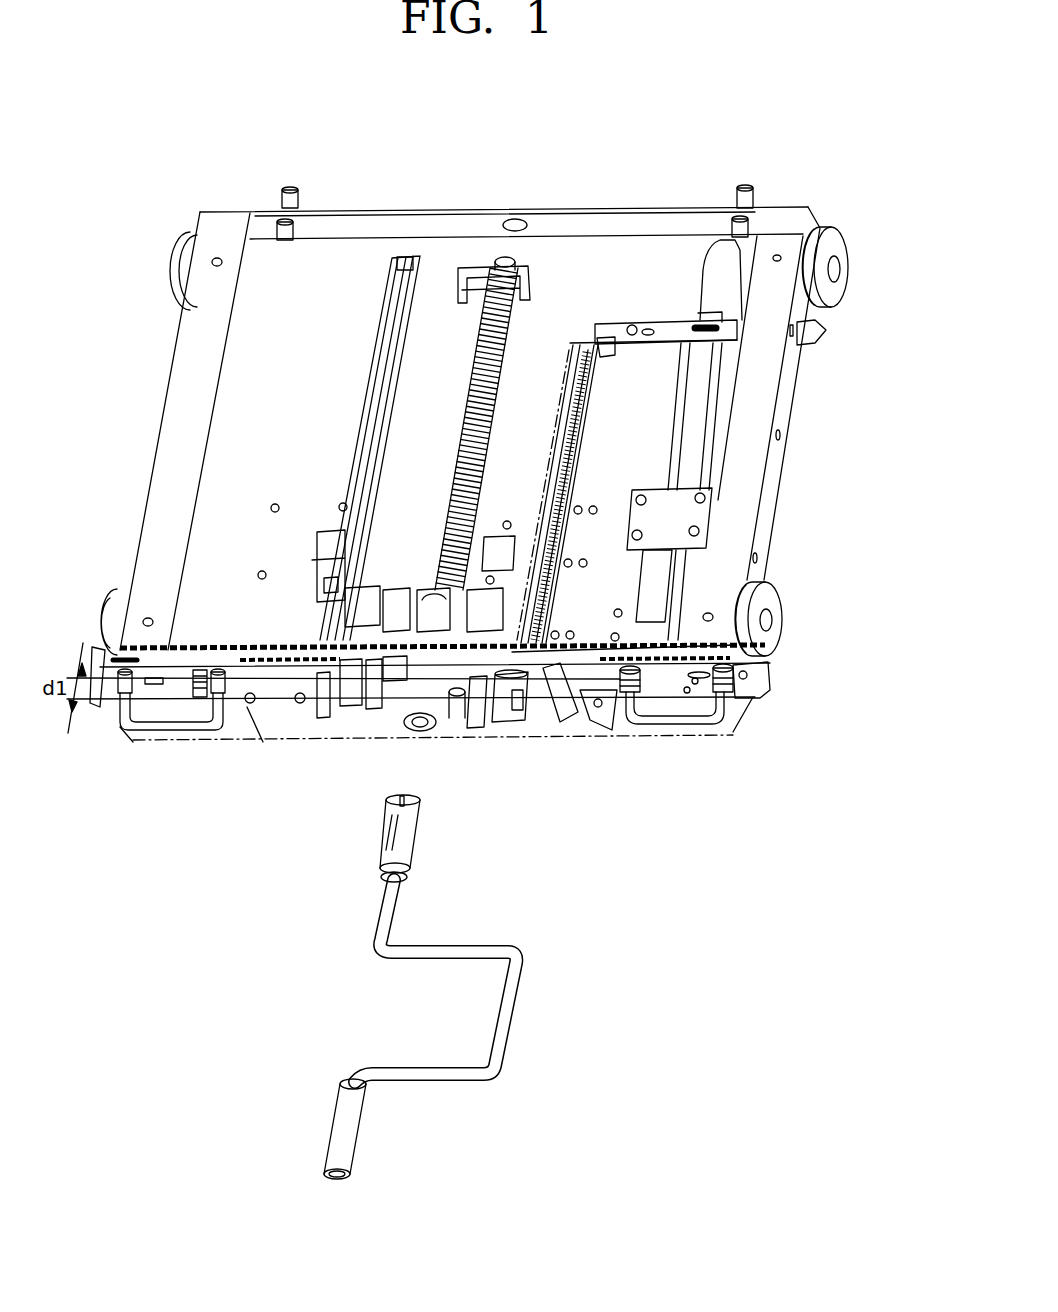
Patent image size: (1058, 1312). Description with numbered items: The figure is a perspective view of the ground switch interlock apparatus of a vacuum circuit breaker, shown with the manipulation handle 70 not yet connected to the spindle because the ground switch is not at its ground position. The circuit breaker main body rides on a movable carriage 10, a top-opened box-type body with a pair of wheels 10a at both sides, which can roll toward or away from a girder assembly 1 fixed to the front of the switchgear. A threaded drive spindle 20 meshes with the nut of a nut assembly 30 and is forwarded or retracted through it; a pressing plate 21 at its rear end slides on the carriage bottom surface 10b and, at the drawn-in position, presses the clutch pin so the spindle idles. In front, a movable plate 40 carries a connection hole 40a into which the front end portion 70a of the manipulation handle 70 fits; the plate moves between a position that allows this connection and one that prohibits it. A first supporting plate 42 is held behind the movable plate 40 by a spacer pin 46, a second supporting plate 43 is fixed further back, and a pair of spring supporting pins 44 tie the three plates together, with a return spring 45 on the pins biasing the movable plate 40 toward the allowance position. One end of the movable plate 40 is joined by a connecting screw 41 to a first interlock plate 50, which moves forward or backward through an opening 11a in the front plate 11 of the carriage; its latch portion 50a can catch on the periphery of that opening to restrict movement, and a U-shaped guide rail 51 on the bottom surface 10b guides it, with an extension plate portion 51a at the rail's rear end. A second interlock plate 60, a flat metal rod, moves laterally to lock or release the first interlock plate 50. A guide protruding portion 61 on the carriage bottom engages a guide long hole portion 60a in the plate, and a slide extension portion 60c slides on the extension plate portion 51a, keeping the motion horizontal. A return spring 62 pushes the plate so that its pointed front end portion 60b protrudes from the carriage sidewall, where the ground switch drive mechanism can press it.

The girder assembly 1 is at (760, 702).
The movable carriage 10 is at (167, 389).
The wheels 10a is at (840, 255).
The carriage bottom surface 10b is at (356, 268).
The front plate 11 is at (712, 656).
The opening 11a is at (603, 694).
The drive spindle 20 is at (478, 337).
The pressing plate 21 is at (476, 272).
The nut assembly 30 is at (430, 574).
The movable plate 40 is at (507, 722).
The connection hole 40a is at (413, 732).
The connecting screw 41 is at (518, 700).
The first supporting plate 42 is at (350, 706).
The second supporting plate 43 is at (320, 707).
The spring supporting pins 44 is at (474, 718).
The return spring 45 is at (455, 712).
The spacer pin 46 is at (370, 708).
The first interlock plate 50 is at (582, 343).
The latch portion 50a is at (562, 714).
The guide rail 51 is at (567, 364).
The extension plate portion 51a is at (600, 395).
The second interlock plate 60 is at (667, 330).
The guide long hole portion 60a is at (647, 328).
The front end portion 60b is at (828, 331).
The slide extension portion 60c is at (614, 350).
The guide protruding portion 61 is at (631, 325).
The return spring 62 is at (710, 325).
The manipulation handle 70 is at (528, 995).
The front end portion 70a is at (410, 840).